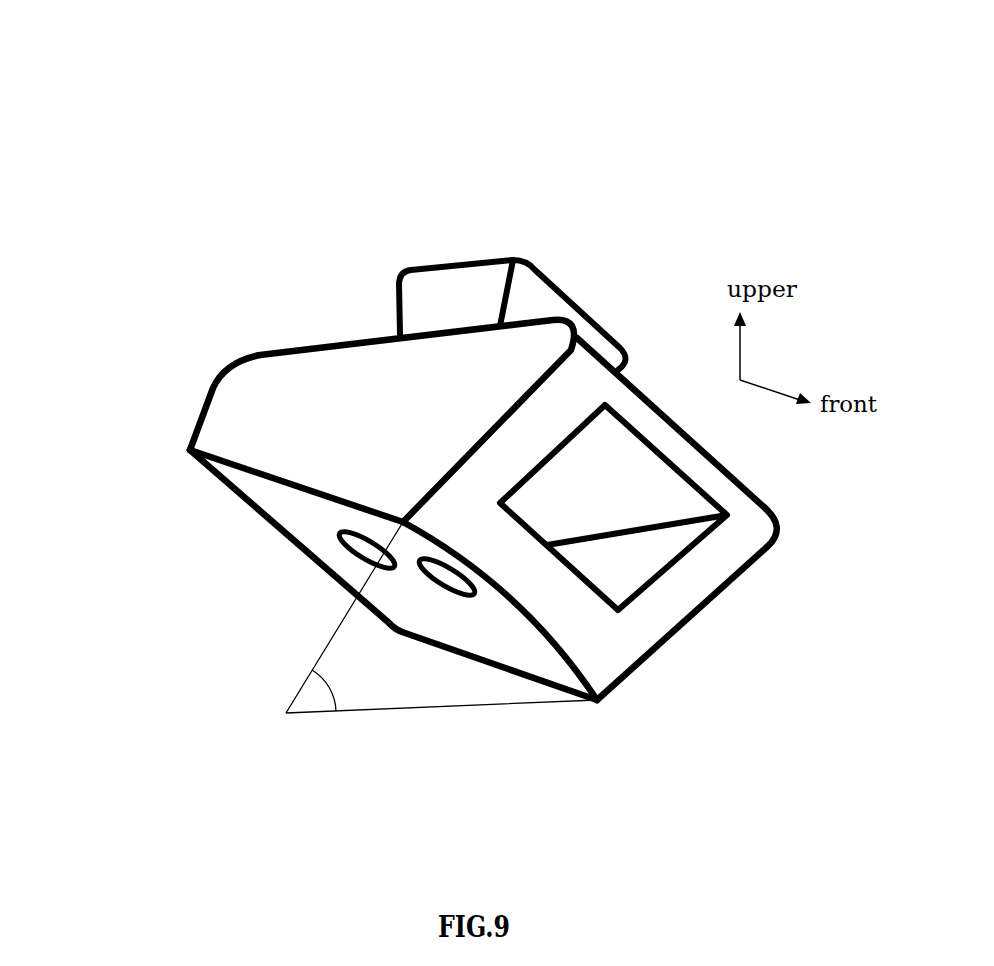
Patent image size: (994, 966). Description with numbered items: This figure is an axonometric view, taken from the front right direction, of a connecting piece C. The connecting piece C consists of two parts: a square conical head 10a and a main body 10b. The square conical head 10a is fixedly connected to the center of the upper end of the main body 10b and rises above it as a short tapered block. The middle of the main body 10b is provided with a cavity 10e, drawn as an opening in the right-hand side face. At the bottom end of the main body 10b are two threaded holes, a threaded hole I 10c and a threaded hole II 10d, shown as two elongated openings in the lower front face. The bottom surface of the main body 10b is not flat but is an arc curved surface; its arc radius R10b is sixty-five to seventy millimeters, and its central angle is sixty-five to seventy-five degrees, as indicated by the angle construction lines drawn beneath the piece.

The connecting piece C is at (362, 148).
The square conical head 10a is at (420, 298).
The main body 10b is at (295, 415).
The threaded hole I 10c is at (343, 543).
The threaded hole II 10d is at (427, 578).
The cavity 10e is at (648, 553).
The arc radius R10b is at (413, 709).